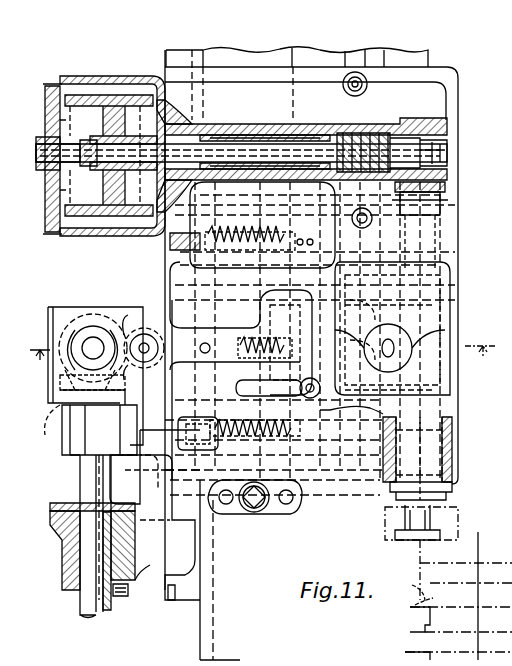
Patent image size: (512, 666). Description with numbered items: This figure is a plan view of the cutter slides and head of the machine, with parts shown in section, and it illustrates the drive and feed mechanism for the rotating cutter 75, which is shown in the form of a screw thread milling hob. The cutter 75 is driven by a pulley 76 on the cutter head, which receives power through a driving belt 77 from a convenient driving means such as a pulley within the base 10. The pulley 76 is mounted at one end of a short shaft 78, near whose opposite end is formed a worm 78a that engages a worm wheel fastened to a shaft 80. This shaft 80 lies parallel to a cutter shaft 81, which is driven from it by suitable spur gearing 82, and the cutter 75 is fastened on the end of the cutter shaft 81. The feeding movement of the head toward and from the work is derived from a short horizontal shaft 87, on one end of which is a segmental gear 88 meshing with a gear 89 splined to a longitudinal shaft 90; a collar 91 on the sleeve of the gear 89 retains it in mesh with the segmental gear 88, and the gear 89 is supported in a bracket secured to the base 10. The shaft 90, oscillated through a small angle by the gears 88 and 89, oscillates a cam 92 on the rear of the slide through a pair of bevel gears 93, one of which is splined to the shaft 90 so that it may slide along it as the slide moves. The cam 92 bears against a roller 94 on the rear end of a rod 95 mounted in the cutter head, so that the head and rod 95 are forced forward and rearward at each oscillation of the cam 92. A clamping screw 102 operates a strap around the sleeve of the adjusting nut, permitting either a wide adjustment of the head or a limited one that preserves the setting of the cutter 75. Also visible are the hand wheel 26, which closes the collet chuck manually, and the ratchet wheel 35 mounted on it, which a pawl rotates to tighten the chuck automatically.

The base 10 is at (266, 362).
The hand wheel 26 is at (416, 566).
The ratchet wheel 35 is at (418, 606).
The rotating cutter 75 is at (452, 520).
The pulley 76 is at (127, 95).
The driving belt 77 is at (90, 92).
The short shaft 78 is at (262, 144).
The worm 78a is at (342, 136).
The shaft 80 is at (338, 206).
The cutter shaft 81 is at (440, 372).
The spur gearing 82 is at (392, 288).
The short horizontal shaft 87 is at (150, 548).
The segmental gear 88 is at (105, 480).
The gear 89 is at (62, 527).
The longitudinal shaft 90 is at (90, 482).
The collar 91 is at (128, 590).
The cam 92 is at (118, 330).
The bevel gears 93 is at (88, 430).
The roller 94 is at (131, 335).
The rod 95 is at (218, 345).
The clamping screw 102 is at (300, 395).